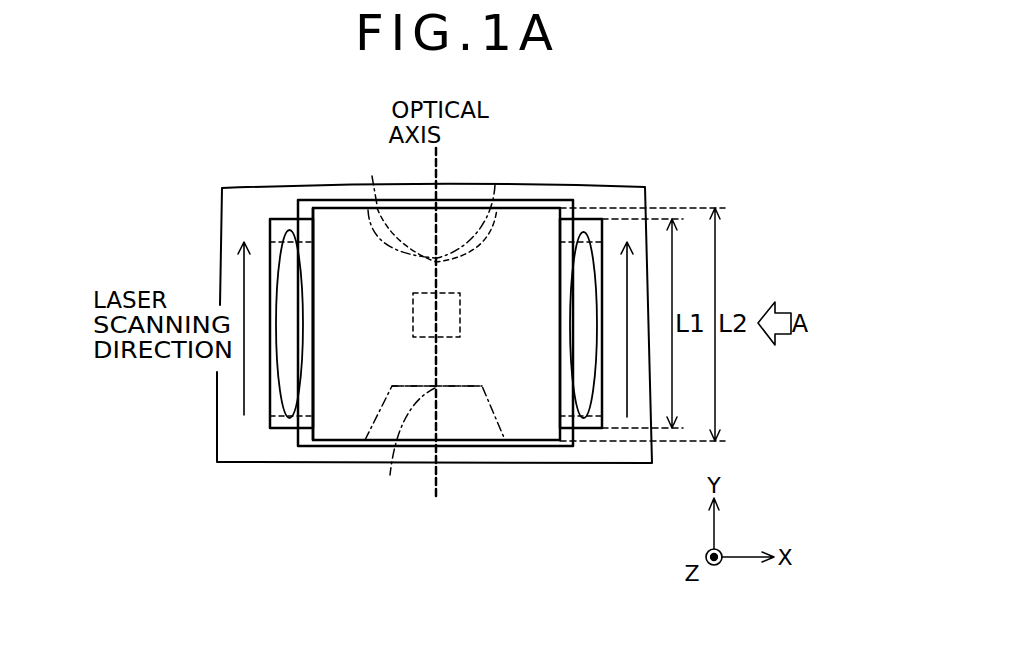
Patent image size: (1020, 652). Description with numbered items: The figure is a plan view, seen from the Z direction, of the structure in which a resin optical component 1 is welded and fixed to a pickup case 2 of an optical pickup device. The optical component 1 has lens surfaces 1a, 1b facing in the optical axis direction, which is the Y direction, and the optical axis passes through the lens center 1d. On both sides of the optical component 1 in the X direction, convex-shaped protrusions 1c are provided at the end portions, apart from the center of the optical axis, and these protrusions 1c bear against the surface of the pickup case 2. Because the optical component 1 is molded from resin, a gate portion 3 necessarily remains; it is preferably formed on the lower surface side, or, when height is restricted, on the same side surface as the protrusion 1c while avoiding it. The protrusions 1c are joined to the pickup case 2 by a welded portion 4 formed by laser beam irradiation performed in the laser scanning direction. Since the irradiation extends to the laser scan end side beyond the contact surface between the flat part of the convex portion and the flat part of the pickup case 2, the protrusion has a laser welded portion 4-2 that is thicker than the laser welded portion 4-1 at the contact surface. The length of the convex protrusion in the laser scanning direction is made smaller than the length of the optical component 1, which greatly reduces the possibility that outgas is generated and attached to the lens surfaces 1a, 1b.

The optical component 1 is at (536, 250).
The lens surface 1a is at (490, 205).
The lens surface 1b is at (460, 400).
The protrusion 1c is at (272, 402).
The lens center 1d is at (428, 328).
The pickup case 2 is at (240, 217).
The gate portion 3 is at (420, 310).
The welded portion 4 is at (282, 418).
The laser welded portion 4-1 is at (583, 418).
The laser welded portion 4-2 is at (590, 235).